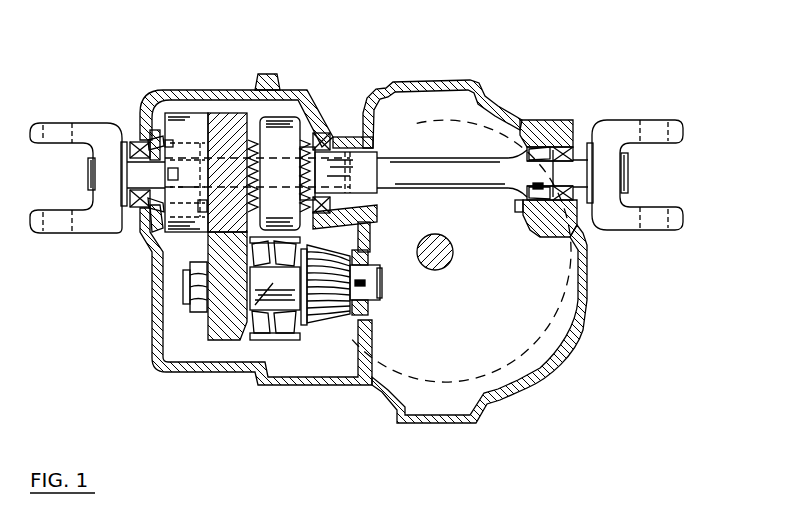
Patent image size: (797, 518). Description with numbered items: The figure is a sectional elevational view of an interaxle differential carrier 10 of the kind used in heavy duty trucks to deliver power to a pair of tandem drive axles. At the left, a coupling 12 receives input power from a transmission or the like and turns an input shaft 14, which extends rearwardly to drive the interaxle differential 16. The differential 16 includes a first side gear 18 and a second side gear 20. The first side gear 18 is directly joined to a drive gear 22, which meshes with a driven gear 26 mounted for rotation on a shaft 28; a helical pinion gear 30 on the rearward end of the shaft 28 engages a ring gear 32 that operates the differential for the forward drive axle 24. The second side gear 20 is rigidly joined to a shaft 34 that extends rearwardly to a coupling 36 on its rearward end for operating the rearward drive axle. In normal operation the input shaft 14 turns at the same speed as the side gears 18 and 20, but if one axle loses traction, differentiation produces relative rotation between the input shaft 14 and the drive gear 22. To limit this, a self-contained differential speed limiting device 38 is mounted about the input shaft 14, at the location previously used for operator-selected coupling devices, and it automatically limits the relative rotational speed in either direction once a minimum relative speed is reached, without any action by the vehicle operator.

The interaxle differential carrier 10 is at (484, 75).
The coupling 12 is at (100, 213).
The input shaft 14 is at (132, 182).
The interaxle differential 16 is at (288, 133).
The first side gear 18 is at (253, 147).
The second side gear 20 is at (305, 160).
The drive gear 22 is at (222, 127).
The forward drive axle 24 is at (447, 265).
The driven gear 26 is at (210, 328).
The shaft 28 is at (247, 318).
The helical pinion gear 30 is at (335, 320).
The ring gear 32 is at (557, 298).
The shaft 34 is at (490, 177).
The coupling 36 is at (605, 133).
The differential speed limiting device 38 is at (176, 99).